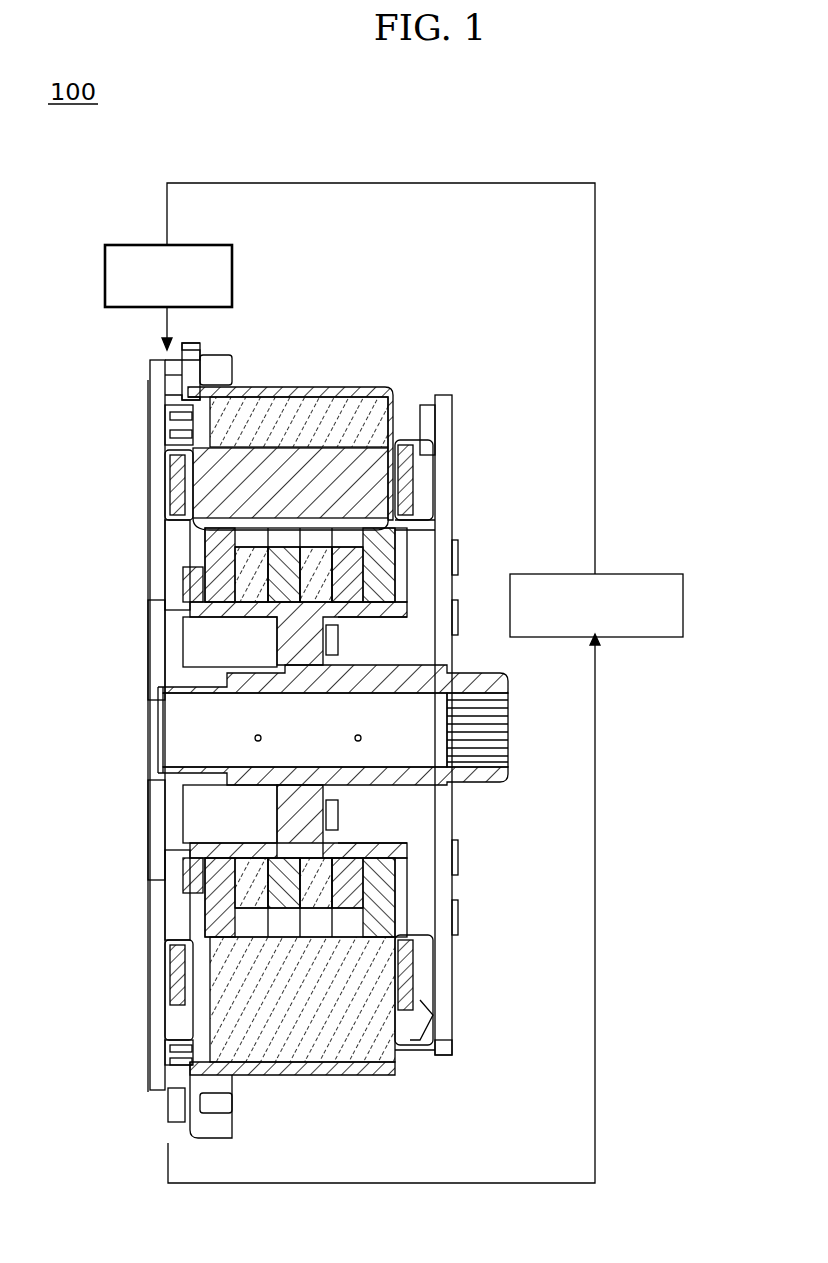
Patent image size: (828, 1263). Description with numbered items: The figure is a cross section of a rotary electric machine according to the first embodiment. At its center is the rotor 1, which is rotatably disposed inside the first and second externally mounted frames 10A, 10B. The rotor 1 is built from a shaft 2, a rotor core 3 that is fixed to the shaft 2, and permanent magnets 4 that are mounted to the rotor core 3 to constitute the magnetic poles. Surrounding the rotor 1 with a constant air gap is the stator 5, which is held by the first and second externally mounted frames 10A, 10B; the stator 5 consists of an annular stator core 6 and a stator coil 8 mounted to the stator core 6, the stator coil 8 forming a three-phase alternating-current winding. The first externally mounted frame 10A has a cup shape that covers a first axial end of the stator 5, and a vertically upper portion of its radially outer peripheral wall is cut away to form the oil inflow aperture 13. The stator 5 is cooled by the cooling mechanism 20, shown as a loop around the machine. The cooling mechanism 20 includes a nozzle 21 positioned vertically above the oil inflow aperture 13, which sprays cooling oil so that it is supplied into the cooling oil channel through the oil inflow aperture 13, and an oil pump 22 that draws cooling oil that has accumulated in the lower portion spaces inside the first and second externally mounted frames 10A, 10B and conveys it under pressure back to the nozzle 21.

The rotor 1 is at (522, 808).
The shaft 2 is at (455, 790).
The rotor core 3 is at (440, 866).
The permanent magnets 4 is at (385, 912).
The stator 5 is at (325, 322).
The stator core 6 is at (276, 406).
The stator coil 8 is at (317, 460).
The first externally mounted frame 10A is at (142, 452).
The second externally mounted frame 10B is at (456, 446).
The oil inflow aperture 13 is at (165, 375).
The cooling mechanism 20 is at (600, 338).
The nozzle 21 is at (105, 263).
The oil pump 22 is at (645, 572).